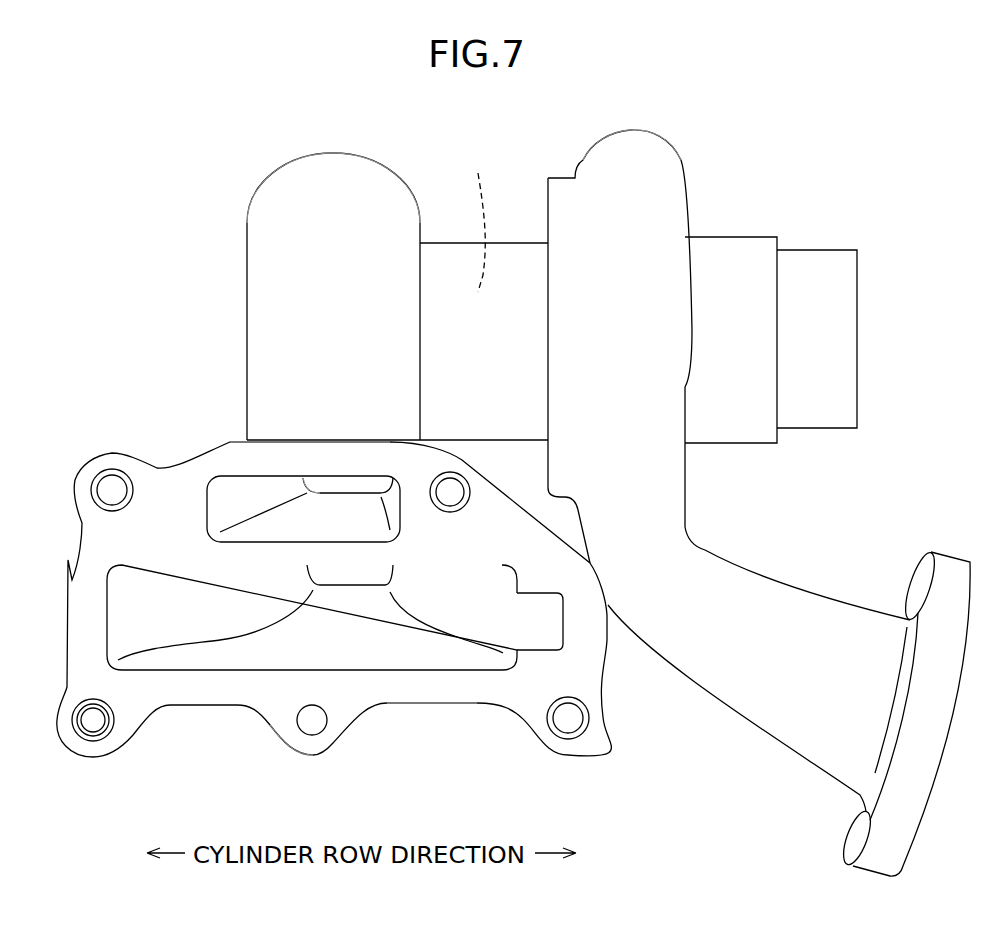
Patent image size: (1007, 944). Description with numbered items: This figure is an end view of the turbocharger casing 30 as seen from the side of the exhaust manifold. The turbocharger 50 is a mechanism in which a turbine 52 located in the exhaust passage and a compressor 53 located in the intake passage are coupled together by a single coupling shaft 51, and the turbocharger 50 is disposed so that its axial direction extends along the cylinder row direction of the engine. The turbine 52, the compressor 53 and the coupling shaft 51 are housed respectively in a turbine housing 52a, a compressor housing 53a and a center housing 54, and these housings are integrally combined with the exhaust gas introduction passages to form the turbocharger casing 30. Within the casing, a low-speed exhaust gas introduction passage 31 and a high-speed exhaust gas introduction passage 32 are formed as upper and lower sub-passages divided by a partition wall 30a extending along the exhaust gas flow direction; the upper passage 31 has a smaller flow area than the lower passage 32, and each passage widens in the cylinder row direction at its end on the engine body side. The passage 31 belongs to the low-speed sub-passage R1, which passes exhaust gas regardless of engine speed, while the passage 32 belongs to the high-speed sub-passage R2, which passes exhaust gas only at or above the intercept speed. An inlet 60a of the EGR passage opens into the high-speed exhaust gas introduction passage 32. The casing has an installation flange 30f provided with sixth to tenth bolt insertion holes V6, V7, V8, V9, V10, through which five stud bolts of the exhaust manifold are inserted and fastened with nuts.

The turbocharger casing 30 is at (168, 711).
The partition wall 30a is at (238, 502).
The installation flange 30f is at (477, 690).
The low-speed exhaust gas introduction passage 31 is at (280, 550).
The high-speed exhaust gas introduction passage 32 is at (250, 656).
The inlet of EGR passage 60a is at (540, 628).
The turbocharger 50 is at (503, 212).
The coupling shaft 51 is at (479, 217).
The turbine 52 is at (275, 257).
The turbine housing 52a is at (292, 195).
The compressor 53 is at (660, 212).
The compressor housing 53a is at (665, 178).
The center housing 54 is at (447, 257).
The low-speed sub-passage R1 is at (292, 470).
The high-speed sub-passage R2 is at (341, 679).
The sixth bolt insertion hole V6 is at (452, 492).
The seventh bolt insertion hole V7 is at (110, 493).
The eighth bolt insertion hole V8 is at (568, 720).
The ninth bolt insertion hole V9 is at (312, 723).
The tenth bolt insertion hole V10 is at (93, 723).